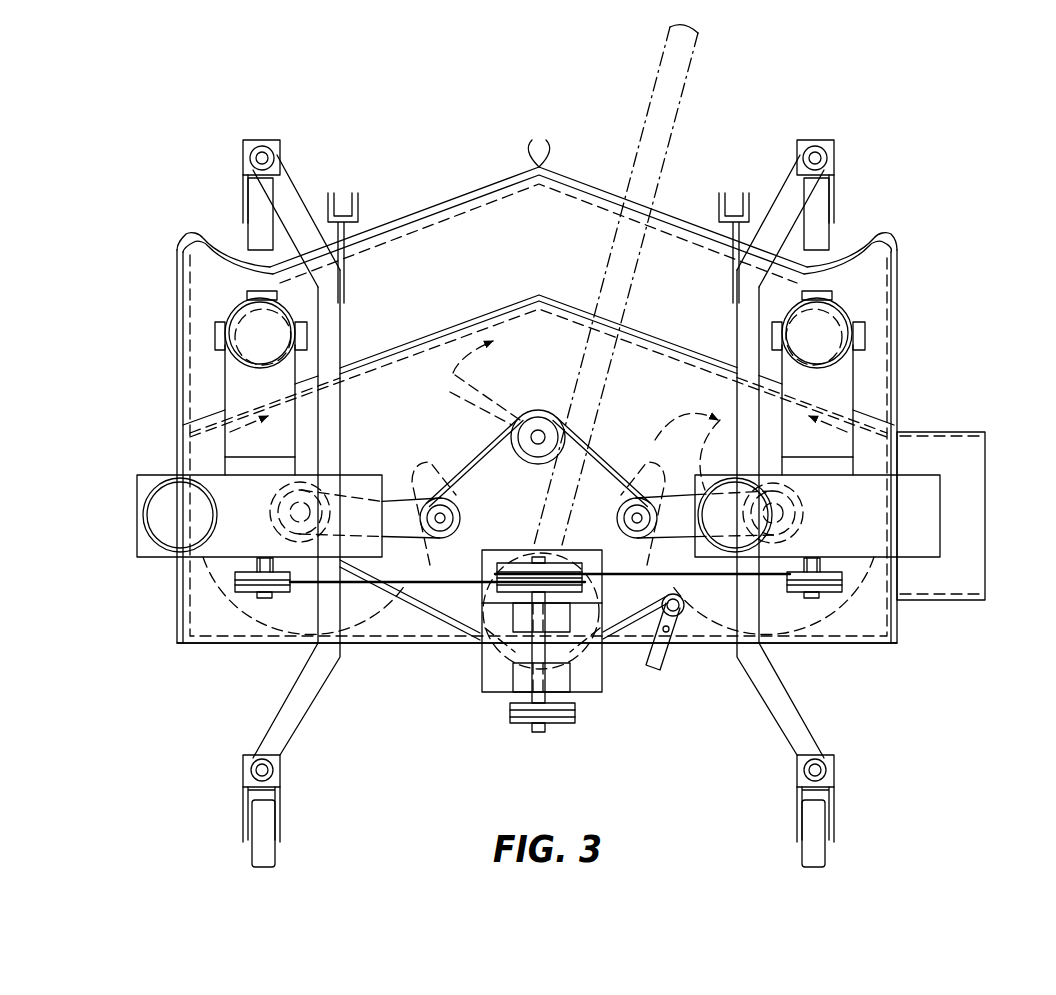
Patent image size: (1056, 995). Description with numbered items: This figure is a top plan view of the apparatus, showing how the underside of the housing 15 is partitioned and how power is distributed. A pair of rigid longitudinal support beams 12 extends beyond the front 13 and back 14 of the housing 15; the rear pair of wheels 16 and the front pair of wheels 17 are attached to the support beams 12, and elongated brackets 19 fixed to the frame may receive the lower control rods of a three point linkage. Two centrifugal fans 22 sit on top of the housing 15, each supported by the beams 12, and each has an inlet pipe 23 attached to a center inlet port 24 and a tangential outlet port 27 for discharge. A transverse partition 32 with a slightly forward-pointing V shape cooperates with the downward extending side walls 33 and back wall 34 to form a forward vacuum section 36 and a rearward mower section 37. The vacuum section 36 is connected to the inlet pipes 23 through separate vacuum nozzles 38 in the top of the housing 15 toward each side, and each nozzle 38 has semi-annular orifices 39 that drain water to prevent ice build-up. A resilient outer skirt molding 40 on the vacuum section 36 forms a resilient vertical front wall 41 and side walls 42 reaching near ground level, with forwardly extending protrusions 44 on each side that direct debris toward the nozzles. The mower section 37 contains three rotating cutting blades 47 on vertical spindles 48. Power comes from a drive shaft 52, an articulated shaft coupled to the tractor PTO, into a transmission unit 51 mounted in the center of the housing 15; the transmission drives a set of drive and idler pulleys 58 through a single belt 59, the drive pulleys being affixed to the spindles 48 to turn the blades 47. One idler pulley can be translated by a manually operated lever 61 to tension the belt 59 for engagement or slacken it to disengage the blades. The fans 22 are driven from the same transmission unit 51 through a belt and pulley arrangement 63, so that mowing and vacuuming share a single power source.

The longitudinal support beams 12 is at (340, 305).
The front 13 is at (455, 330).
The back 14 is at (537, 503).
The housing 15 is at (158, 591).
The wheels 16 is at (258, 850).
The wheels 17 is at (258, 238).
The elongated brackets 19 is at (340, 192).
The centrifugal fans 22 is at (559, 509).
The inlet pipe 23 is at (240, 384).
The center inlet port 24 is at (330, 466).
The tangential outlet port 27 is at (158, 520).
The transverse partition 32 is at (517, 296).
The side walls 33 is at (190, 625).
The back wall 34 is at (860, 650).
The forward vacuum section 36 is at (443, 240).
The mower section 37 is at (640, 368).
The vacuum nozzles 38 is at (240, 318).
The semi-annular orifices 39 is at (220, 340).
The resilient outer skirt molding 40 is at (478, 184).
The front wall 41 is at (546, 140).
The side walls 42 is at (177, 285).
The forwardly extending protrusions 44 is at (192, 236).
The rotating cutting blades 47 is at (450, 383).
The vertical spindles 48 is at (537, 430).
The transmission unit 51 is at (470, 718).
The drive shaft 52 is at (645, 133).
The drive and idler pulleys 58 is at (545, 412).
The belt 59 is at (490, 470).
The lever 61 is at (652, 672).
The belt and pulley arrangement 63 is at (265, 597).